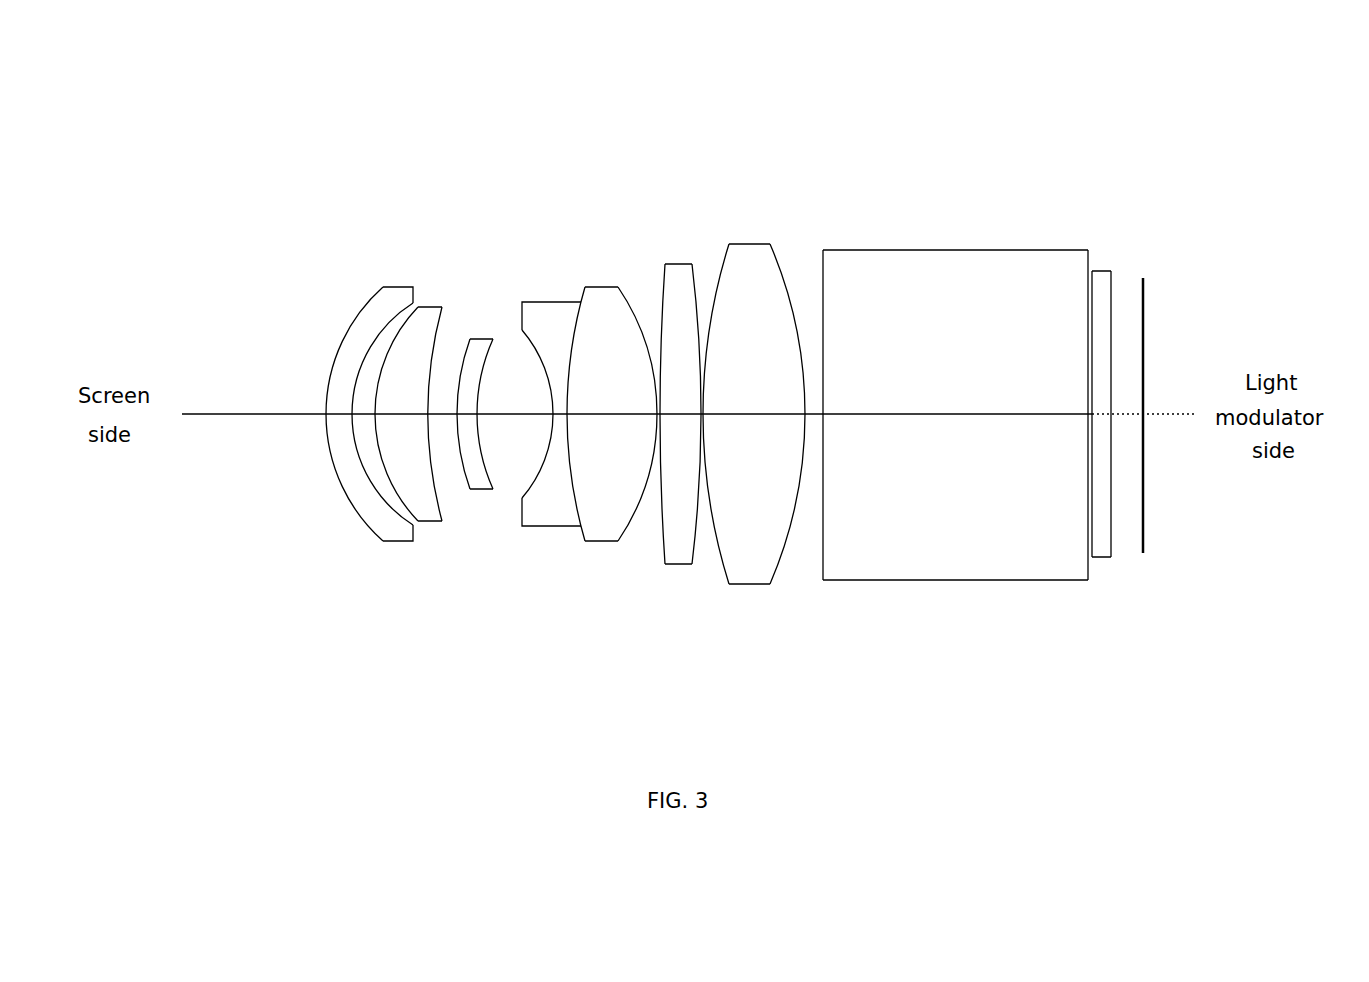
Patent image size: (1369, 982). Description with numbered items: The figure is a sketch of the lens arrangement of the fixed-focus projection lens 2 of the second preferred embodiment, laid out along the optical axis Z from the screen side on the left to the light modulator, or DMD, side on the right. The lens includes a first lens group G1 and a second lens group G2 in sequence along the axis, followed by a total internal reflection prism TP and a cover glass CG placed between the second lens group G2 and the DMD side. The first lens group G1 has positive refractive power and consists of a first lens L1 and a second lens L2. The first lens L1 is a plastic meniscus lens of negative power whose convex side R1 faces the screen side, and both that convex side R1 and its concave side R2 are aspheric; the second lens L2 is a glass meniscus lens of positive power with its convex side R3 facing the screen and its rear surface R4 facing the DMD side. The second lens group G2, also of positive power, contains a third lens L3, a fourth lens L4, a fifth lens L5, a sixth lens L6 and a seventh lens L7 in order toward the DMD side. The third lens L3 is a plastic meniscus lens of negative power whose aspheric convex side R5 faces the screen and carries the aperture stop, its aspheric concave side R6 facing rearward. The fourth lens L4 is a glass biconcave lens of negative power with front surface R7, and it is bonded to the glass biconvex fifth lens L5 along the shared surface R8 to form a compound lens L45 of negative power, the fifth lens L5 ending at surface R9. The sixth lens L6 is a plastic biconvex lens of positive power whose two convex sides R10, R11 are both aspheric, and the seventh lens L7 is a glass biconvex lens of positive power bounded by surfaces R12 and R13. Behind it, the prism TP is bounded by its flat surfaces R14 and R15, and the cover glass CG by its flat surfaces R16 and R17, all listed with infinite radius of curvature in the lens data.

The fixed-focus projection lens 2 is at (213, 135).
The optical axis Z is at (203, 415).
The first lens group G1 is at (460, 666).
The second lens group G2 is at (773, 666).
The first lens L1 is at (392, 542).
The second lens L2 is at (436, 522).
The third lens L3 is at (480, 490).
The fourth lens L4 is at (548, 527).
The fifth lens L5 is at (597, 542).
The compound lens L45 is at (627, 625).
The sixth lens L6 is at (677, 565).
The seventh lens L7 is at (748, 585).
The total internal reflection prism TP is at (952, 581).
The cover glass CG is at (1105, 558).
The convex side of the first lens R1 is at (364, 300).
The concave side of the first lens R2 is at (403, 288).
The convex side of the second lens R3 is at (419, 305).
The DMD-side surface of the second lens R4 is at (440, 306).
The convex side of the third lens R5 is at (466, 337).
The concave side of the third lens R6 is at (494, 337).
The screen-side surface of the fourth lens R7 is at (523, 300).
The cemented surface of the fourth and fifth lenses R8 is at (583, 286).
The DMD-side surface of the fifth lens R9 is at (623, 286).
The convex side of the sixth lens R10 is at (664, 263).
The convex side of the sixth lens R11 is at (693, 263).
The screen-side surface of the seventh lens R12 is at (726, 243).
The DMD-side surface of the seventh lens R13 is at (770, 243).
The entrance surface of the prism R14 is at (822, 249).
The exit surface of the prism R15 is at (1088, 270).
The screen-side surface of the cover glass R16 is at (1096, 271).
The DMD-side surface of the cover glass R17 is at (1111, 300).